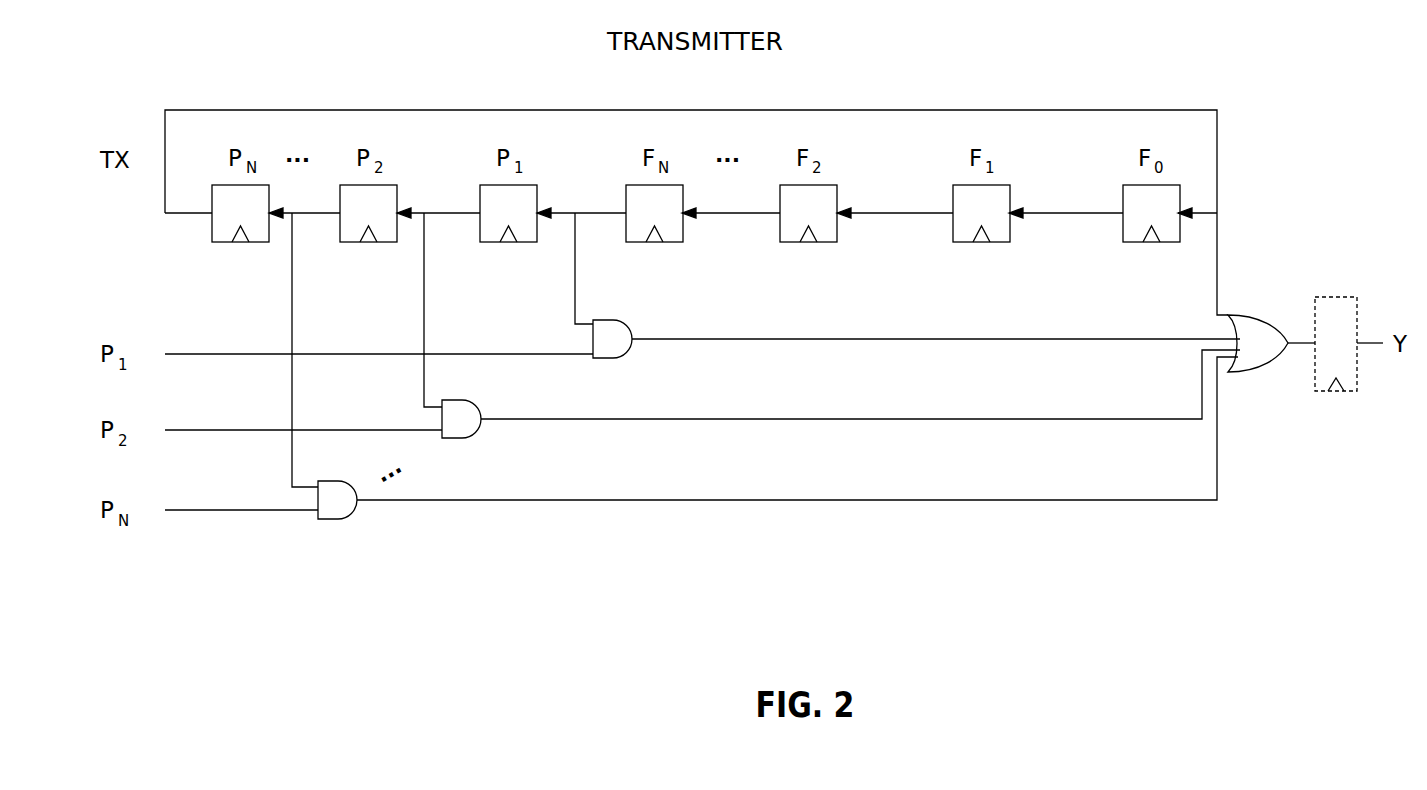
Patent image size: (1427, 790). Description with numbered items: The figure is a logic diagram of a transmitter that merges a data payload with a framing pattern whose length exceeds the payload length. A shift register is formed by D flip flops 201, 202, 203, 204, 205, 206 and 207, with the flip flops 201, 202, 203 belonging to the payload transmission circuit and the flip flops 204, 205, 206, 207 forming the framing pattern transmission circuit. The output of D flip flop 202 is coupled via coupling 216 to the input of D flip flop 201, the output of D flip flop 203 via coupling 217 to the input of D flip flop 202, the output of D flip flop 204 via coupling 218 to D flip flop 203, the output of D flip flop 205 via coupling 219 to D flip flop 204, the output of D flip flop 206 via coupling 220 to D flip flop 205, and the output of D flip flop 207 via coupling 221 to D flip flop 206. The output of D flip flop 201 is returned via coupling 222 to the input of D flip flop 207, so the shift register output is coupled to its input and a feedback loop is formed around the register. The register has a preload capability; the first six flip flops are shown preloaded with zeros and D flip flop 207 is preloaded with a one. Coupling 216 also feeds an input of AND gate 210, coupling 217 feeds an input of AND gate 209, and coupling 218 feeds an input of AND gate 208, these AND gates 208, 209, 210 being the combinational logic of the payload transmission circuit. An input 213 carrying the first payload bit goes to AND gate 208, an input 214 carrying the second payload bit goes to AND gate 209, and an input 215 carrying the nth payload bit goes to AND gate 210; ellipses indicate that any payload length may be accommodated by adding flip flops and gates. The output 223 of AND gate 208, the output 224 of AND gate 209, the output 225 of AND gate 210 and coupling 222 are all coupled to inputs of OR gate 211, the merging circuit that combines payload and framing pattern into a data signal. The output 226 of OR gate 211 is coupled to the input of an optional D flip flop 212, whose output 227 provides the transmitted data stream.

The D flip flop 201 is at (222, 243).
The D flip flop 202 is at (350, 243).
The D flip flop 203 is at (490, 243).
The D flip flop 204 is at (636, 243).
The D flip flop 205 is at (832, 243).
The D flip flop 206 is at (1000, 243).
The D flip flop 207 is at (1165, 243).
The AND gate 208 is at (628, 350).
The AND gate 209 is at (478, 432).
The AND gate 210 is at (358, 514).
The OR gate 211 is at (1243, 373).
The D flip flop 212 is at (1347, 297).
The input 213 is at (205, 355).
The input 214 is at (205, 431).
The input 215 is at (205, 511).
The coupling 216 is at (292, 310).
The coupling 217 is at (424, 310).
The coupling 218 is at (575, 298).
The coupling 219 is at (727, 214).
The coupling 220 is at (880, 213).
The coupling 221 is at (1040, 213).
The coupling 222 is at (1218, 150).
The output 223 is at (768, 341).
The output 224 is at (855, 420).
The output 225 is at (903, 501).
The output 226 is at (1293, 343).
The output 227 is at (1373, 346).